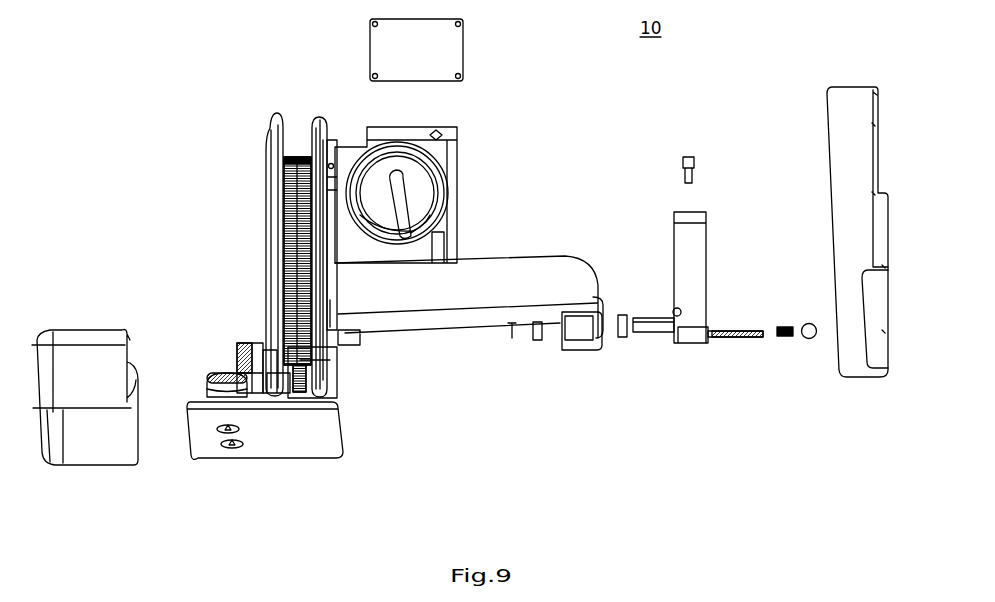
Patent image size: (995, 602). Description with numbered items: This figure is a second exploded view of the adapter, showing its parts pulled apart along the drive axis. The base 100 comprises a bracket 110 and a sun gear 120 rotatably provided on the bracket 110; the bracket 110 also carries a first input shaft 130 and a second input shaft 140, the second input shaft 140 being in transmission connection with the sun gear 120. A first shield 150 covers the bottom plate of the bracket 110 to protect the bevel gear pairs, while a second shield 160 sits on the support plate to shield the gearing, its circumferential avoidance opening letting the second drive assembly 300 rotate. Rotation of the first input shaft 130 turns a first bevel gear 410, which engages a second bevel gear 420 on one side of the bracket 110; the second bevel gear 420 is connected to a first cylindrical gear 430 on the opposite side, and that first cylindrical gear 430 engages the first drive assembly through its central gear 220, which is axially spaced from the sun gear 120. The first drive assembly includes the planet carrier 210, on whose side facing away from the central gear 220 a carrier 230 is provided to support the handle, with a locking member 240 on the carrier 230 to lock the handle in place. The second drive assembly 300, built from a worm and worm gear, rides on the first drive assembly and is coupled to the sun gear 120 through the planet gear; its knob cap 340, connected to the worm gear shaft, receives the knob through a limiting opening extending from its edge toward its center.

The base 100 is at (158, 166).
The bracket 110 is at (270, 130).
The sun gear 120 is at (271, 206).
The first input shaft 130 is at (226, 430).
The second input shaft 140 is at (233, 445).
The first shield 150 is at (90, 445).
The second shield 160 is at (843, 184).
The planet carrier 210 is at (342, 302).
The central gear 220 is at (343, 357).
The carrier 230 is at (474, 313).
The locking member 240 is at (700, 300).
The second drive assembly 300 is at (455, 152).
The knob cap 340 is at (455, 209).
The first bevel gear 410 is at (210, 377).
The second bevel gear 420 is at (246, 358).
The first cylindrical gear 430 is at (280, 356).